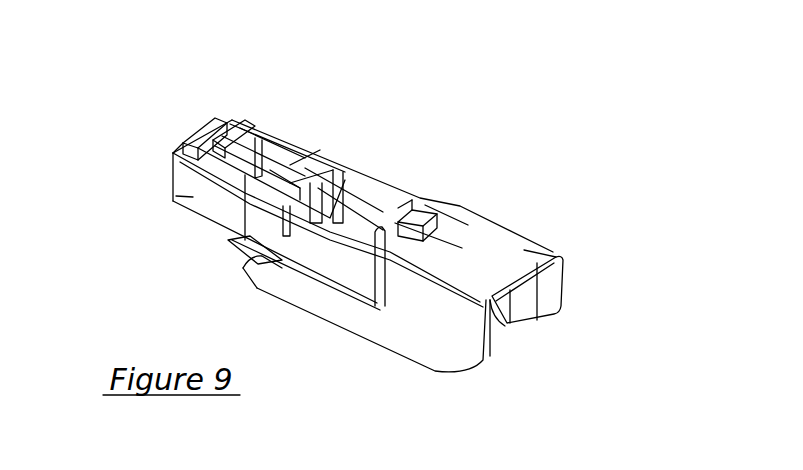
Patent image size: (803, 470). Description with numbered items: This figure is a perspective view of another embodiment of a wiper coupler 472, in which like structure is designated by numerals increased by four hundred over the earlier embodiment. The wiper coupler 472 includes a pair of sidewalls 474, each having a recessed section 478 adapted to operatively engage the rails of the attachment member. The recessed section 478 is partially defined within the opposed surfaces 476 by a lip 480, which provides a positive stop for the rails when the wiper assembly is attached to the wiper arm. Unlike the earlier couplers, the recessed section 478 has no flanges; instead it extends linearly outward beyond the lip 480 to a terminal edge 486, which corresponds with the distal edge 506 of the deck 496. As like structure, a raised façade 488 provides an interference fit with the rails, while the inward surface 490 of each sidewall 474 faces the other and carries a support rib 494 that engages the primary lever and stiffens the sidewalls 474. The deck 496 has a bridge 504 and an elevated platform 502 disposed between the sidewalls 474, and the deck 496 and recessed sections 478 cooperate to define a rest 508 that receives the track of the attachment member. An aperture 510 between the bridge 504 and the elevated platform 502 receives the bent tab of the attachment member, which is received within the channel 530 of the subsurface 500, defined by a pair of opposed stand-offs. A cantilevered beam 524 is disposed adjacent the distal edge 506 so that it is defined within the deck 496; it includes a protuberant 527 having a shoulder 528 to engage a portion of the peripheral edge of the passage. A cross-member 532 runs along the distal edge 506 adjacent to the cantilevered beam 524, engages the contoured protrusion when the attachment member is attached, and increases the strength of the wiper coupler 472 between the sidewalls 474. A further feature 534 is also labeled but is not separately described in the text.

The wiper coupler 472 is at (375, 86).
The sidewalls 474 is at (567, 280).
The opposed surfaces 476 is at (372, 327).
The recessed section 478 is at (176, 198).
The lip 480 is at (250, 270).
The terminal edge 486 is at (172, 188).
The raised façade 488 is at (232, 230).
The inward surface 490 is at (540, 312).
The support rib 494 is at (332, 205).
The deck 496 is at (309, 133).
The subsurface 500 is at (503, 327).
The elevated platform 502 is at (530, 252).
The bridge 504 is at (400, 206).
The distal edge 506 is at (178, 155).
The rest 508 is at (270, 130).
The aperture 510 is at (417, 201).
The cantilevered beam 524 is at (283, 162).
The protuberant 527 is at (232, 125).
The shoulder 528 is at (212, 207).
The channel 530 is at (428, 208).
The cross-member 532 is at (200, 140).
The top edge 534 is at (173, 158).